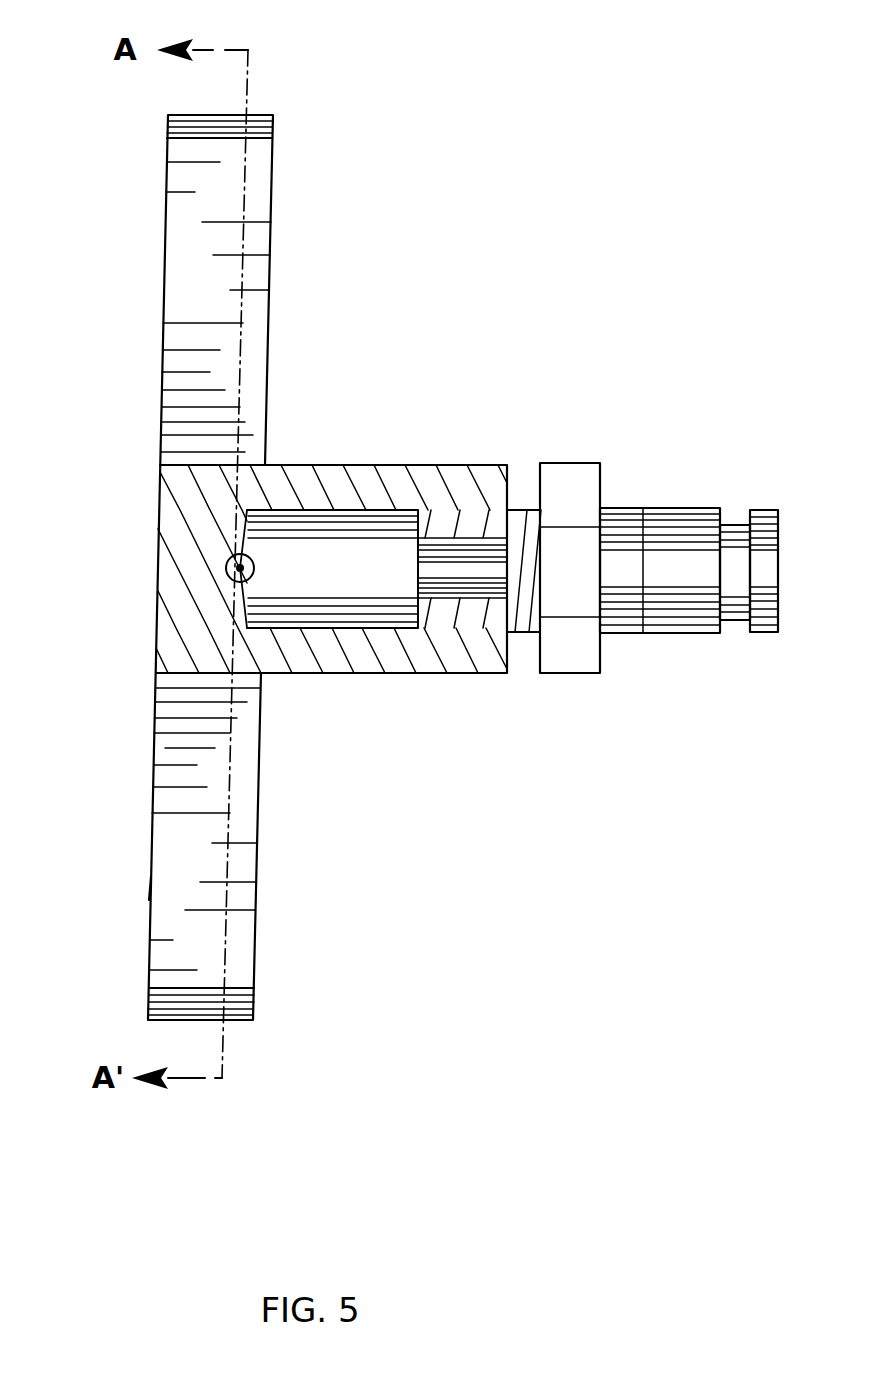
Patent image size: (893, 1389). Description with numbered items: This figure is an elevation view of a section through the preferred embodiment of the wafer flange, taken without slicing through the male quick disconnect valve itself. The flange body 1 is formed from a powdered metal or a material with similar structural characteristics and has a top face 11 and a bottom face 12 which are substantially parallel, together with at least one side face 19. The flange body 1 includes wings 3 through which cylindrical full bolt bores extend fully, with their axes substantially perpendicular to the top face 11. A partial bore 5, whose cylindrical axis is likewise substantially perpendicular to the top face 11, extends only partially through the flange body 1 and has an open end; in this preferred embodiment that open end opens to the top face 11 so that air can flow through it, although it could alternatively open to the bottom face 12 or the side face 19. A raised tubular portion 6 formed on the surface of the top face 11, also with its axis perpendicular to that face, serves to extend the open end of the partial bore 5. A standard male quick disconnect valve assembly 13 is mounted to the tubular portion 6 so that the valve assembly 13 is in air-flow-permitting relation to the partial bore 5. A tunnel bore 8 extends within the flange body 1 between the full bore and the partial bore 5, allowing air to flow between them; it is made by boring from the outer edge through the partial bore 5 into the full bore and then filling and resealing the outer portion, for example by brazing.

The flange body 1 is at (267, 123).
The wings 3 is at (203, 125).
The partial bore 5 is at (353, 523).
The raised tubular portion 6 is at (468, 653).
The tunnel bore 8 is at (240, 568).
The top face 11 is at (257, 842).
The bottom face 12 is at (150, 877).
The male quick disconnect valve assembly 13 is at (657, 520).
The side face 19 is at (163, 752).